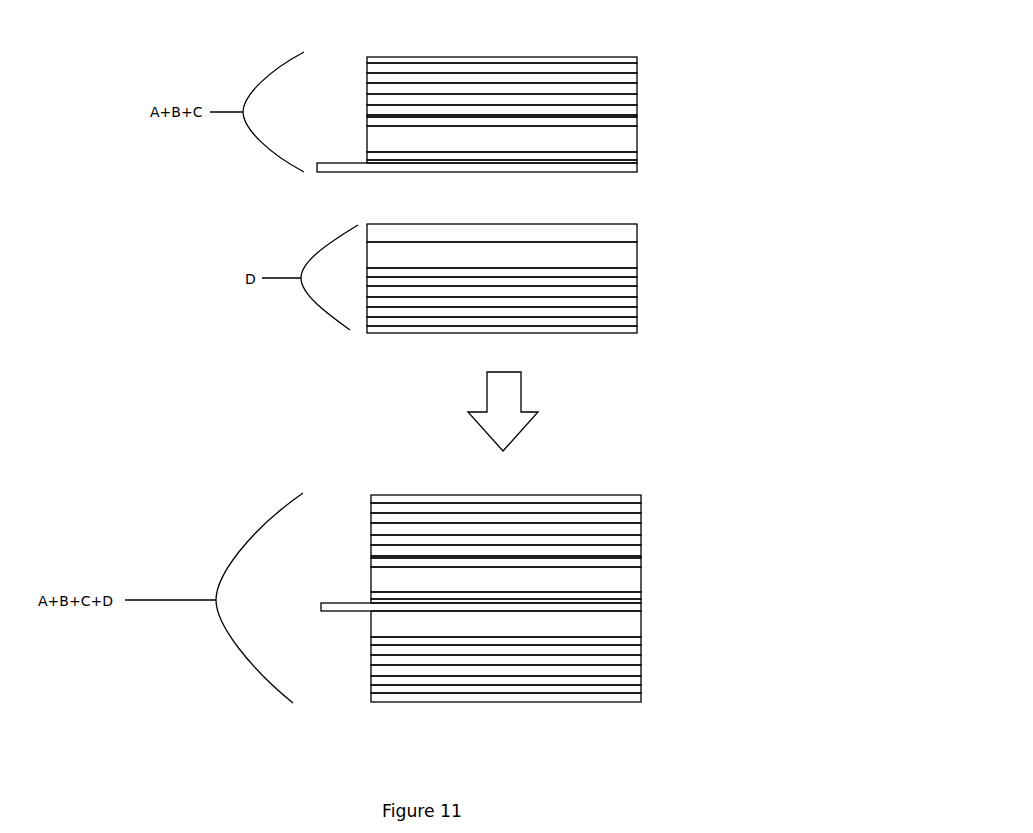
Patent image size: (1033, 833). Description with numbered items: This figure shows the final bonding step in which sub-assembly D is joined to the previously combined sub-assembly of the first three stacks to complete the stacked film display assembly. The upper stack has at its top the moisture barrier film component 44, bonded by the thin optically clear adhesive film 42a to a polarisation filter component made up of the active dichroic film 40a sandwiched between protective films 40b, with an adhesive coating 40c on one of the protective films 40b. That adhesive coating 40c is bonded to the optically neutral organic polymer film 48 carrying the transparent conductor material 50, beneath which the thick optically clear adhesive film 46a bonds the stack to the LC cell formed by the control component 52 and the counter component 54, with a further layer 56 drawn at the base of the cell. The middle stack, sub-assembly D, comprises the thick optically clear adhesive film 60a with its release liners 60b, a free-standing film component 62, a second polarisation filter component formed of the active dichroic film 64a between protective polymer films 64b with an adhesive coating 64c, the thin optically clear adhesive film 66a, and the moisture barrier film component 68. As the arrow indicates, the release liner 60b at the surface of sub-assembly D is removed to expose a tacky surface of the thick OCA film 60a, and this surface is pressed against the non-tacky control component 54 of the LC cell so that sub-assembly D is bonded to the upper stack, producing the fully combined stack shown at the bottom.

The active dichroic film 40a is at (638, 90).
The protective films 40b is at (638, 80).
The adhesive coating 40c is at (638, 108).
The optically clear adhesive film 42a is at (638, 70).
The moisture barrier film component 44 is at (638, 58).
The thick optically clear adhesive film 46a is at (638, 137).
The optically neutral organic polymer film 48 is at (638, 118).
The transparent conductor material 50 is at (638, 113).
The control component 52 is at (638, 153).
The counter component 54 is at (638, 168).
The layer 56 is at (638, 160).
The thick optically clear adhesive film 60a is at (638, 253).
The release liners 60b is at (638, 233).
The pre-prepared free-standing film component 62 is at (638, 272).
The active dichroic film 64a is at (638, 302).
The protective polymer films 64b is at (638, 292).
The adhesive coating 64c is at (638, 282).
The optically clear adhesive film 66a is at (638, 322).
The moisture barrier film component 68 is at (638, 332).